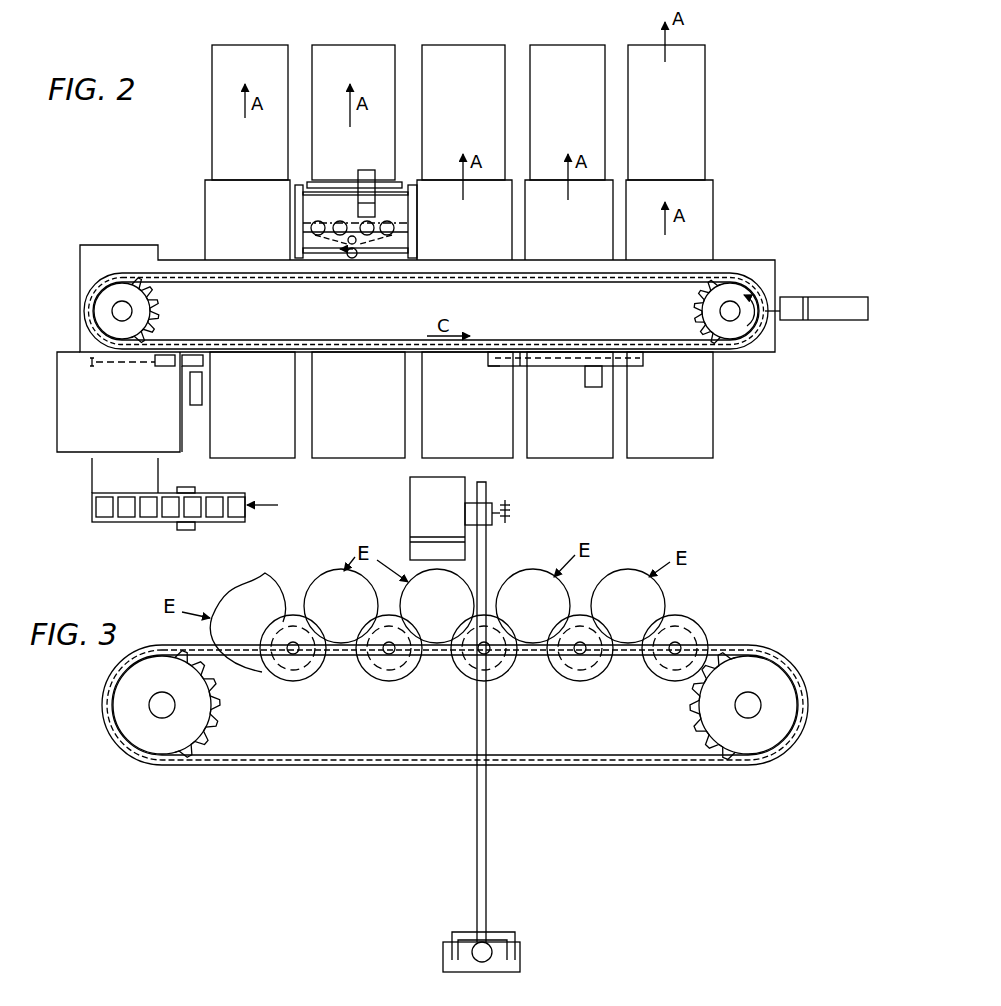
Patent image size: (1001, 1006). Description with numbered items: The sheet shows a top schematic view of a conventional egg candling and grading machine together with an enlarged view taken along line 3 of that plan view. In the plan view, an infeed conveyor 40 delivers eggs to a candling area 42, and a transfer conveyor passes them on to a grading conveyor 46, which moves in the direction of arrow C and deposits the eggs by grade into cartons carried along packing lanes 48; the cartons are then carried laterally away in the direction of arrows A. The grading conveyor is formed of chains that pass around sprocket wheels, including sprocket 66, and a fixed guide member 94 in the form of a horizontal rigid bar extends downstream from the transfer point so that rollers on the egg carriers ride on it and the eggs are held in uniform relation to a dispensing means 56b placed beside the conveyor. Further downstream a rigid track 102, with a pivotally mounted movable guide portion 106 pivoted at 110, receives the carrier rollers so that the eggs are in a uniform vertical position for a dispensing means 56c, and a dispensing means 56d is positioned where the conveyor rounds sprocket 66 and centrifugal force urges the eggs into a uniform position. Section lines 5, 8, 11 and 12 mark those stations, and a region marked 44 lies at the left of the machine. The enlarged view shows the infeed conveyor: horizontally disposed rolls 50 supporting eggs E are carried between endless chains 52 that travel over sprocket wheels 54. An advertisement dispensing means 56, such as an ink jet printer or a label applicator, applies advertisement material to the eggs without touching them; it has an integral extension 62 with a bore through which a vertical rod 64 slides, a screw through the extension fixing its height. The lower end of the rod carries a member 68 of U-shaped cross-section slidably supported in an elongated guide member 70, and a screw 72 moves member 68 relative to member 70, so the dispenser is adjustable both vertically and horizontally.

In FIG. 2, the infeed conveyor 40 is at (88, 536).
In FIG. 3, the infeed conveyor 40 is at (147, 789).
In FIG. 2, the candling area 42 is at (66, 458).
In FIG. 2, the guide plate 44 is at (80, 364).
In FIG. 2, the grading conveyor 46 is at (320, 339).
In FIG. 2, the packing lanes 48 is at (268, 46).
In FIG. 2, the rolls 50 is at (150, 504).
In FIG. 3, the rolls 50 is at (367, 680).
In FIG. 3, the endless chains 52 is at (222, 655).
In FIG. 3, the sprocket wheels 54 is at (193, 720).
In FIG. 2, the advertisement dispensing means 56 is at (183, 530).
In FIG. 3, the advertisement dispensing means 56 is at (444, 524).
In FIG. 2, the dispensing means 56b is at (202, 395).
In FIG. 2, the dispensing means 56c is at (598, 392).
In FIG. 2, the dispensing means 56d is at (793, 301).
In FIG. 3, the integral extension 62 is at (490, 530).
In FIG. 3, the vertical rod 64 is at (485, 565).
In FIG. 2, the sprocket wheel 66 is at (733, 330).
In FIG. 3, the sprocket wheel 66 is at (512, 513).
In FIG. 2, the member of U-shaped cross-section 68 is at (98, 305).
In FIG. 3, the member of U-shaped cross-section 68 is at (498, 932).
In FIG. 3, the elongated guide member 70 is at (520, 953).
In FIG. 3, the screw 72 is at (479, 943).
In FIG. 2, the guide member 94 is at (186, 363).
In FIG. 2, the rigid track 102 is at (572, 355).
In FIG. 2, the movable guide portion 106 is at (498, 367).
In FIG. 2, the pivot 110 is at (518, 355).
In FIG. 2, the section line 3- 3 is at (127, 532).
In FIG. 2, the section line 5- 5 is at (173, 425).
In FIG. 2, the section line 8- 8 is at (610, 337).
In FIG. 2, the section line 11- 11 is at (777, 227).
In FIG. 2, the section line 12- 12 is at (300, 151).